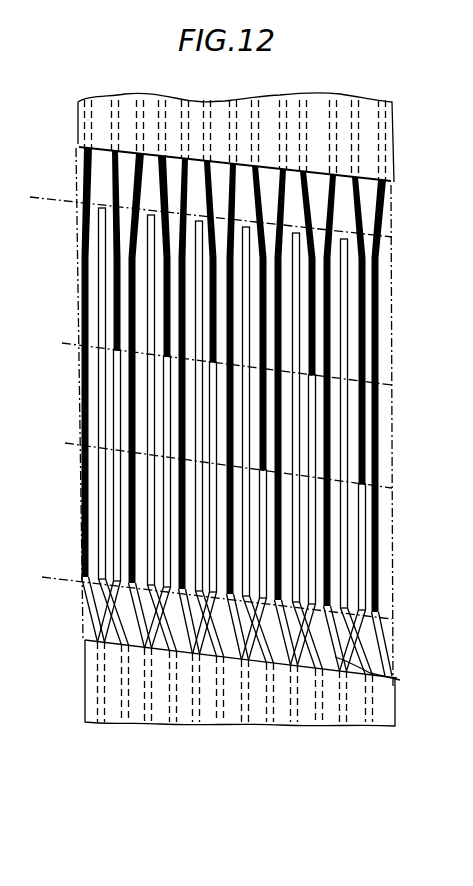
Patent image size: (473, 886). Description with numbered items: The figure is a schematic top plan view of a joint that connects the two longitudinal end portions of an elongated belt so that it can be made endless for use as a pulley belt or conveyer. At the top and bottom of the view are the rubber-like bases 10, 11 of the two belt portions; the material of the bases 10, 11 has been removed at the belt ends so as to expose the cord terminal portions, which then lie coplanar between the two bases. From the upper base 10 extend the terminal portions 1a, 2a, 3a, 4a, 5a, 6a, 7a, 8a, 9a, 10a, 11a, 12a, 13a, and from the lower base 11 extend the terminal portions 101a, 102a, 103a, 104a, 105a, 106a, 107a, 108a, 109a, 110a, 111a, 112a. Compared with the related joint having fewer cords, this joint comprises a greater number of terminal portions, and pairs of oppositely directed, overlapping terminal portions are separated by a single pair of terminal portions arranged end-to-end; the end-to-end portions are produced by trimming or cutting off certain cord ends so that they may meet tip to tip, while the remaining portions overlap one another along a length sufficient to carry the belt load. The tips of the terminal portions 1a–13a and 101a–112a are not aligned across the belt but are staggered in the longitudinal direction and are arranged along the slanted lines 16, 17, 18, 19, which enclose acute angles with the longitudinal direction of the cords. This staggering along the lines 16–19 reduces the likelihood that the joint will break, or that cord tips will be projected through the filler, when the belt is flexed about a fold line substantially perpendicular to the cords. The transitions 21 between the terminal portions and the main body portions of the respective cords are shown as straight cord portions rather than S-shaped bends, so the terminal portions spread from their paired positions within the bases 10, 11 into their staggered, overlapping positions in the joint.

The base 10 is at (388, 121).
The base 11 is at (390, 703).
The slanted line 16 is at (56, 196).
The slanted line 17 is at (66, 343).
The slanted line 18 is at (70, 440).
The slanted line 19 is at (42, 578).
The transition 21 is at (370, 673).
The terminal portion 1a is at (83, 156).
The terminal portion 2a is at (135, 208).
The terminal portion 3a is at (140, 272).
The terminal portion 4a is at (165, 243).
The terminal portion 5a is at (177, 292).
The terminal portion 6a is at (216, 195).
The terminal portion 7a is at (239, 190).
The terminal portion 8a is at (262, 205).
The terminal portion 9a is at (282, 223).
The terminal portion 10a is at (316, 262).
The terminal portion 11a is at (332, 284).
The terminal portion 12a is at (362, 313).
The terminal portion 13a is at (379, 343).
The terminal portion 101a is at (100, 627).
The terminal portion 102a is at (120, 607).
The terminal portion 103a is at (157, 553).
The terminal portion 104a is at (175, 528).
The terminal portion 105a is at (200, 490).
The terminal portion 106a is at (213, 640).
The terminal portion 107a is at (264, 640).
The terminal portion 108a is at (262, 533).
The terminal portion 109a is at (300, 560).
The terminal portion 110a is at (318, 592).
The terminal portion 111a is at (350, 627).
The terminal portion 112a is at (365, 603).